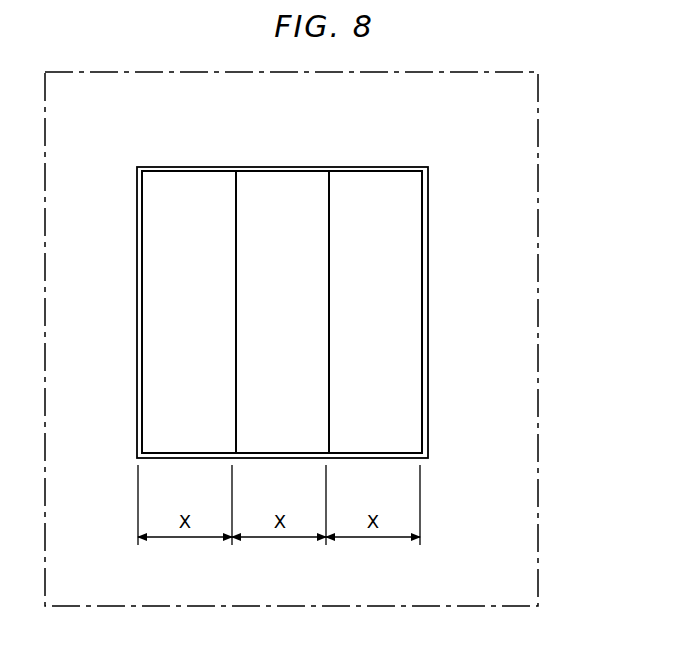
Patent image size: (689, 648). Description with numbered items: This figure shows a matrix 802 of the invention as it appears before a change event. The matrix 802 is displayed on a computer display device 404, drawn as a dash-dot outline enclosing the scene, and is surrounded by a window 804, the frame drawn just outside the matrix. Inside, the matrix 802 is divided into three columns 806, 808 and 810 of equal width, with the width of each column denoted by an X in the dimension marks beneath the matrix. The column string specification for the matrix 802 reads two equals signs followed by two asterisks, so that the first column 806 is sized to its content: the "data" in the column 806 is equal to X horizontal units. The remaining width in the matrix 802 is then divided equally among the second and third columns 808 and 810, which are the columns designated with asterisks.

The computer display device 404 is at (537, 163).
The matrix 802 is at (423, 213).
The window 804 is at (428, 278).
The column 806 is at (188, 183).
The column 808 is at (282, 183).
The column 810 is at (375, 183).